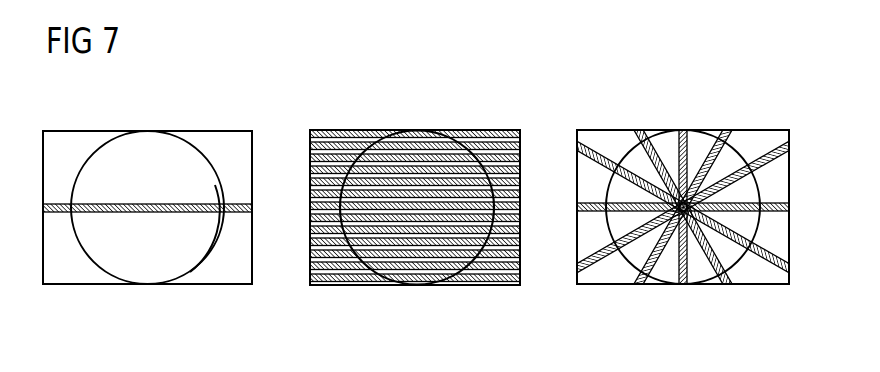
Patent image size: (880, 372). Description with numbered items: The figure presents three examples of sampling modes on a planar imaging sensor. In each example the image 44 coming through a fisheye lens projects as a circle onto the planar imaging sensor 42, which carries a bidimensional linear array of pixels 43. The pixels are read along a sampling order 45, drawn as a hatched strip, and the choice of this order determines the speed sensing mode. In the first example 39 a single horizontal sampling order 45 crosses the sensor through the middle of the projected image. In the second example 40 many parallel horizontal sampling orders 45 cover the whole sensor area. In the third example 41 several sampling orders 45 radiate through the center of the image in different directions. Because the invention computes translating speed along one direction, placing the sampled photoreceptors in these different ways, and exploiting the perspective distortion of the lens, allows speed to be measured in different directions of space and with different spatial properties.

The speed sensing mode example 39 is at (147, 220).
The speed sensing mode example 40 is at (415, 186).
The speed sensing mode example 41 is at (683, 186).
The planar imaging sensor 42 is at (62, 288).
The bidimensional linear array of pixels 43 is at (97, 275).
The image 44 is at (195, 272).
The sampling order 45 is at (147, 213).